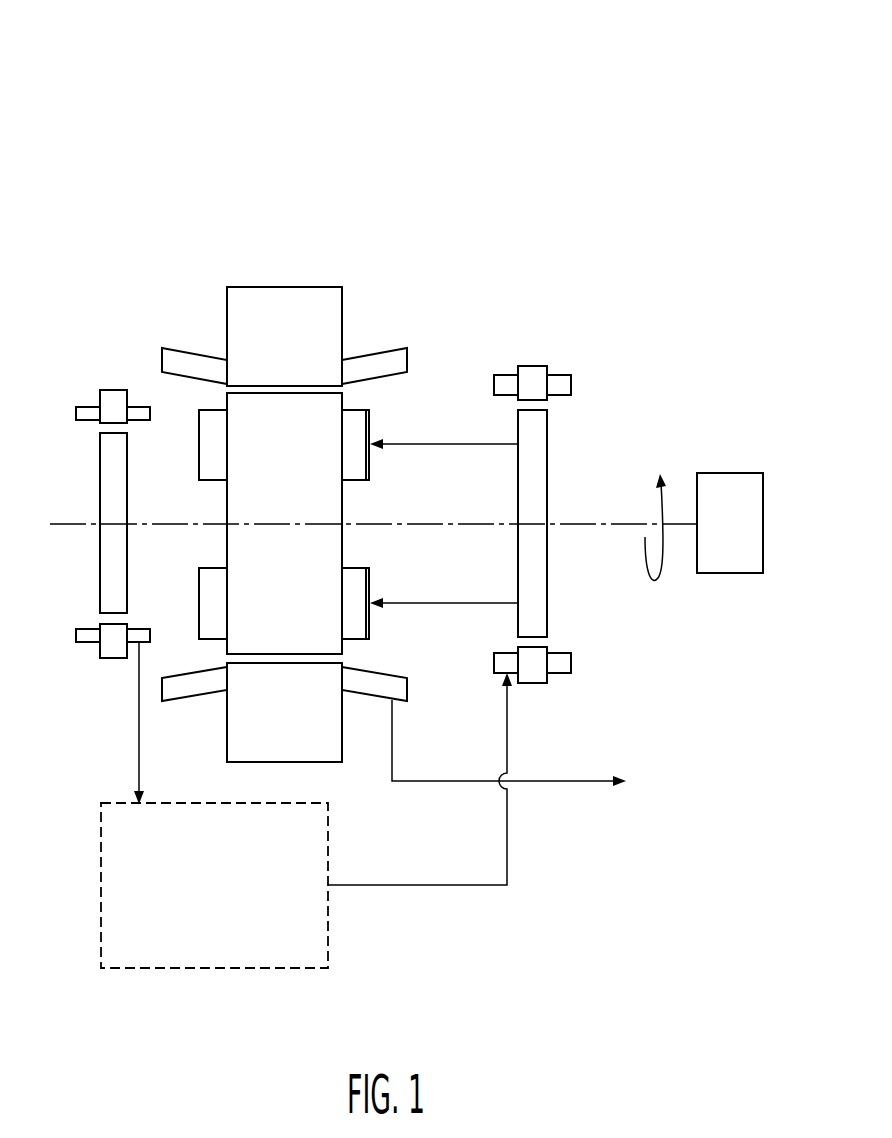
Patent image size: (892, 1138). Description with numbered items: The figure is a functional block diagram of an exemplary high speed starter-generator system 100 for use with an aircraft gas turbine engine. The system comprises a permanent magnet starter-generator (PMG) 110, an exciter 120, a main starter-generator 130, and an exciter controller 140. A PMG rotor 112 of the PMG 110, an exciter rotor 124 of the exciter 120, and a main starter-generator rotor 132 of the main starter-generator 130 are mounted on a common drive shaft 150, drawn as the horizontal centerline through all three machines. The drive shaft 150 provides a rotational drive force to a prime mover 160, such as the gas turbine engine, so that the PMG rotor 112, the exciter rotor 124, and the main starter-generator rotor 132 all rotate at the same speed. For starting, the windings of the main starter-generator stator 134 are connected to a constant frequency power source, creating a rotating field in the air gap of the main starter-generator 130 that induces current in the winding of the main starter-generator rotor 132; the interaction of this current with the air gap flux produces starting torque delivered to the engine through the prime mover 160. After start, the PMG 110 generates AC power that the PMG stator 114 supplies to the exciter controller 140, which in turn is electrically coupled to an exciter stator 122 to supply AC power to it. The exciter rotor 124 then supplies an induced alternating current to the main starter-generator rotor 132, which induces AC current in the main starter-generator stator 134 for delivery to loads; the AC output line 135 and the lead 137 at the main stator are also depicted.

The high speed starter-generator system 100 is at (406, 488).
The permanent magnet starter-generator (PMG) 110 is at (99, 437).
The PMG rotor 112 is at (100, 564).
The PMG stator 114 is at (83, 423).
The exciter 120 is at (558, 437).
The exciter stator 122 is at (571, 665).
The exciter rotor 124 is at (547, 457).
The main starter-generator 130 is at (394, 476).
The main starter-generator rotor 132 is at (344, 516).
The main starter-generator stator 134 is at (343, 725).
The AC output 135 is at (570, 785).
The main generator stator windings 137 is at (344, 389).
The exciter controller 140 is at (108, 802).
The common drive shaft 150 is at (618, 522).
The prime mover 160 is at (730, 473).